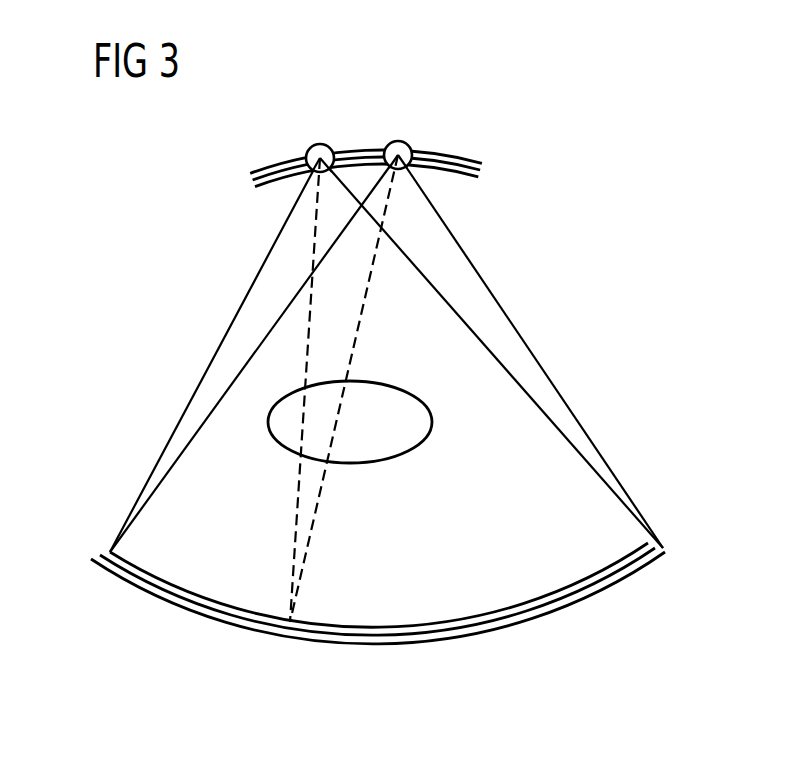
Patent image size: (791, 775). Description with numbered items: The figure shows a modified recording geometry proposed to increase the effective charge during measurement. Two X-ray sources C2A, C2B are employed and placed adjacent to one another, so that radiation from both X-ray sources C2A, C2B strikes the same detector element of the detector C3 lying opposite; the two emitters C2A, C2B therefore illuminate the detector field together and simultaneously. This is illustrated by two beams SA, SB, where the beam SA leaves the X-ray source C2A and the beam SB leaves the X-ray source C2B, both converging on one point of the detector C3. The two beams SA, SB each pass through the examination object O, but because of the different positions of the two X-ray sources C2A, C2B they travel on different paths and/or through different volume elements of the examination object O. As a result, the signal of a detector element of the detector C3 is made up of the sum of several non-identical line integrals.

The X-ray source C2A is at (318, 142).
The X-ray source C2B is at (397, 138).
The detector C3 is at (398, 646).
The beam SA is at (294, 511).
The beam SB is at (358, 330).
The examination object O is at (432, 422).